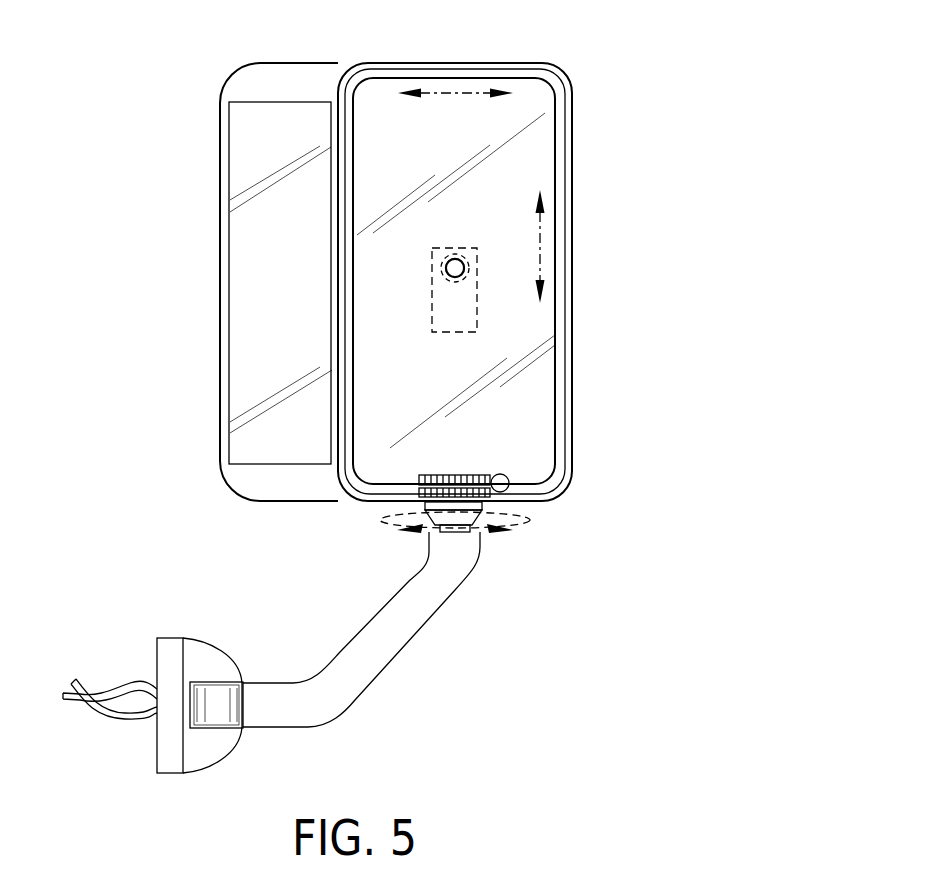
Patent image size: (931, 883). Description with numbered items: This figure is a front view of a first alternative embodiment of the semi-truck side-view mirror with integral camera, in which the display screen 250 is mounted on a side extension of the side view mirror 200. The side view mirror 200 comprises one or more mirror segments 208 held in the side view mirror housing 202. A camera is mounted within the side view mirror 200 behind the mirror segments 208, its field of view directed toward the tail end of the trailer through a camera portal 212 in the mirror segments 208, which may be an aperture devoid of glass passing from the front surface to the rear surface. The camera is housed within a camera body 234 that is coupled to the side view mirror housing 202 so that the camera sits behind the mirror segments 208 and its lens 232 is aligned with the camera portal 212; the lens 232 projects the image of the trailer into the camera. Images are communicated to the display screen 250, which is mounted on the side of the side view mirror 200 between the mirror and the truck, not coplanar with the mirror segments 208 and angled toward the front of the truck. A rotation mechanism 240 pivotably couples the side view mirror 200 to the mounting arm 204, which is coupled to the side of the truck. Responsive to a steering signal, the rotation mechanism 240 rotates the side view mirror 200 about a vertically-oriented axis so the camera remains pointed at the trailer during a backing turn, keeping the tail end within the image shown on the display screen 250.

The side view mirror 200 is at (717, 53).
The side view mirror housing 202 is at (510, 63).
The mounting arm 204 is at (393, 635).
The mirror segments 208 is at (533, 382).
The camera portal 212 is at (455, 256).
The lens 232 is at (444, 269).
The camera body 234 is at (432, 322).
The rotation mechanism 240 is at (508, 491).
The display screen 250 is at (263, 237).